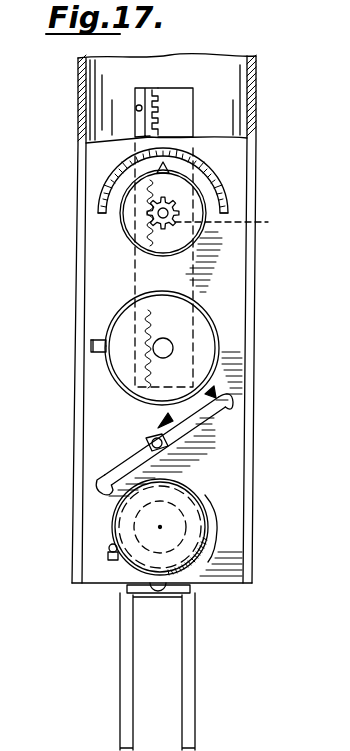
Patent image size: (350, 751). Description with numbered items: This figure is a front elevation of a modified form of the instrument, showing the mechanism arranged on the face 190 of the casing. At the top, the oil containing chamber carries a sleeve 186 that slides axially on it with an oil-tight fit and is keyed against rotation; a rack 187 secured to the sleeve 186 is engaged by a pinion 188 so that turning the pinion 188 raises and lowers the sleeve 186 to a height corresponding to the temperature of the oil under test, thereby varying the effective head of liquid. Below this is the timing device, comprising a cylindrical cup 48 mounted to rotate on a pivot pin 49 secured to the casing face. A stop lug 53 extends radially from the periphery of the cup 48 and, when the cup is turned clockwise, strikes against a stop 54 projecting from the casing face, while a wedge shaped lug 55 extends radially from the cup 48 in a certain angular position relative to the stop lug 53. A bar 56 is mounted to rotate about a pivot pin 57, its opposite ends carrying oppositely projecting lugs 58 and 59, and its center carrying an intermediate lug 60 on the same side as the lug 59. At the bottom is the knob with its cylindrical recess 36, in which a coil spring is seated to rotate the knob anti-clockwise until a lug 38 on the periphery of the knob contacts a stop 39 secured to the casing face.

The face of the instrument 190 is at (78, 117).
The rack 187 is at (152, 88).
The sleeve 186 is at (202, 72).
The pinion 188 is at (268, 222).
The cylindrical cup 48 is at (108, 312).
The pivot pin 49 is at (170, 347).
The stop 54 is at (93, 340).
The stop lug 53 is at (93, 350).
The bar 56 is at (214, 418).
The lug 59 is at (231, 403).
The wedge shaped lug 55 is at (213, 393).
The lug 58 is at (100, 487).
The intermediate lug 60 is at (158, 420).
The pivot pin 57 is at (162, 449).
The cylindrical recess 36 is at (212, 527).
The lug 38 is at (110, 548).
The stop 39 is at (110, 558).